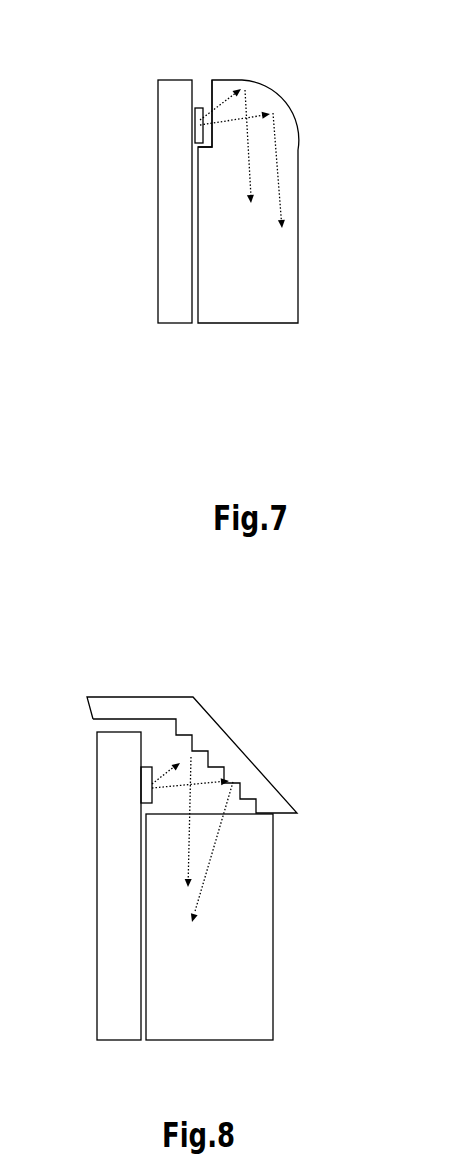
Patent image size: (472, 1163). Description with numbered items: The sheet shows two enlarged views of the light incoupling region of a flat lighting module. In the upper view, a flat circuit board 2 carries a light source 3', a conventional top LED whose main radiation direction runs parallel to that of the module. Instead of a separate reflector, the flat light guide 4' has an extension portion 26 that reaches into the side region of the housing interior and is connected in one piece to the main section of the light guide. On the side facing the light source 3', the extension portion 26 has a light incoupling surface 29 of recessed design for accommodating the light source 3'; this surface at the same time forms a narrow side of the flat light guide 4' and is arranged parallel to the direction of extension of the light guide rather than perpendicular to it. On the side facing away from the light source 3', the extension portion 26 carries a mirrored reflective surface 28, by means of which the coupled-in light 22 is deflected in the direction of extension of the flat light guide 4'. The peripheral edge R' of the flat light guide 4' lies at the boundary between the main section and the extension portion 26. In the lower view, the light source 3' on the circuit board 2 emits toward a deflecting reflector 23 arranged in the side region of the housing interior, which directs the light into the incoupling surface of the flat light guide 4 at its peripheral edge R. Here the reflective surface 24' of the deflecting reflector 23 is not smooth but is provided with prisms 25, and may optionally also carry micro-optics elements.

In FIG. 7, the circuit board 2 is at (167, 303).
In FIG. 8, the circuit board 2 is at (98, 972).
In FIG. 7, the light source 3' is at (142, 108).
In FIG. 7, the flat light guide 4' is at (285, 202).
In FIG. 7, the light 22 is at (282, 188).
In FIG. 7, the extension portion 26 is at (262, 148).
In FIG. 7, the mirrored reflective surface 28 is at (246, 88).
In FIG. 7, the light incoupling surface 29 is at (212, 95).
In FIG. 7, the peripheral edge R' is at (163, 128).
In FIG. 8, the flat light guide 4 is at (240, 927).
In FIG. 8, the deflecting reflector 23 is at (238, 768).
In FIG. 8, the reflective surface 24' is at (311, 761).
In FIG. 8, the prisms 25 is at (200, 738).
In FIG. 8, the peripheral edge R is at (132, 839).